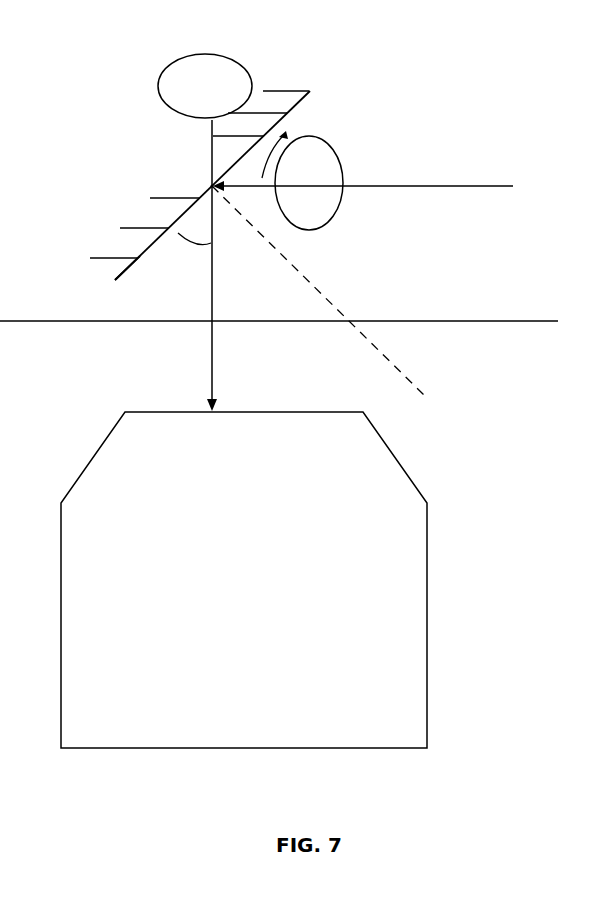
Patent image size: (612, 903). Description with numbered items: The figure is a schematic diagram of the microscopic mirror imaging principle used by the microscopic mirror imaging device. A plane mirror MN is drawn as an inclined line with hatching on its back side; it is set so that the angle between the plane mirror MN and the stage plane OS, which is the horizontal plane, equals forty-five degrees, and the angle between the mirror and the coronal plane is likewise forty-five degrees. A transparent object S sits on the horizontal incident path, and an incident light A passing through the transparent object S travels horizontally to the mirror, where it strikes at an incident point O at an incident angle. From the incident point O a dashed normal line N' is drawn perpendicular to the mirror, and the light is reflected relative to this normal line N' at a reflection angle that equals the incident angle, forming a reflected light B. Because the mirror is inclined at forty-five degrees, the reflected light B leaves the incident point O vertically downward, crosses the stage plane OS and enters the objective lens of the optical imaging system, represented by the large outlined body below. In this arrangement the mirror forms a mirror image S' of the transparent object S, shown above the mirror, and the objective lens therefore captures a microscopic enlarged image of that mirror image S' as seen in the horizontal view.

The mirror image S' is at (205, 65).
The plane mirror end M is at (209, 164).
The plane mirror end N is at (114, 287).
The transparent object S is at (320, 180).
The incident light A is at (363, 169).
The incident point O is at (196, 179).
The reflected light B is at (225, 265).
The normal line N' is at (330, 292).
The stage plane OS is at (279, 300).